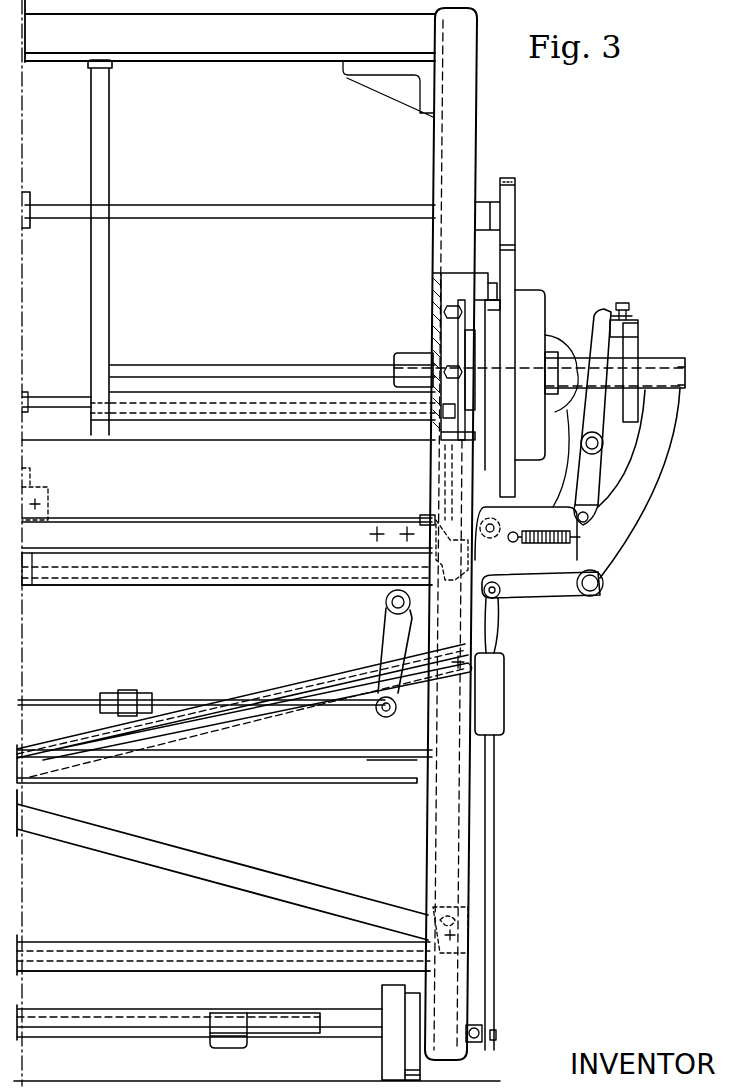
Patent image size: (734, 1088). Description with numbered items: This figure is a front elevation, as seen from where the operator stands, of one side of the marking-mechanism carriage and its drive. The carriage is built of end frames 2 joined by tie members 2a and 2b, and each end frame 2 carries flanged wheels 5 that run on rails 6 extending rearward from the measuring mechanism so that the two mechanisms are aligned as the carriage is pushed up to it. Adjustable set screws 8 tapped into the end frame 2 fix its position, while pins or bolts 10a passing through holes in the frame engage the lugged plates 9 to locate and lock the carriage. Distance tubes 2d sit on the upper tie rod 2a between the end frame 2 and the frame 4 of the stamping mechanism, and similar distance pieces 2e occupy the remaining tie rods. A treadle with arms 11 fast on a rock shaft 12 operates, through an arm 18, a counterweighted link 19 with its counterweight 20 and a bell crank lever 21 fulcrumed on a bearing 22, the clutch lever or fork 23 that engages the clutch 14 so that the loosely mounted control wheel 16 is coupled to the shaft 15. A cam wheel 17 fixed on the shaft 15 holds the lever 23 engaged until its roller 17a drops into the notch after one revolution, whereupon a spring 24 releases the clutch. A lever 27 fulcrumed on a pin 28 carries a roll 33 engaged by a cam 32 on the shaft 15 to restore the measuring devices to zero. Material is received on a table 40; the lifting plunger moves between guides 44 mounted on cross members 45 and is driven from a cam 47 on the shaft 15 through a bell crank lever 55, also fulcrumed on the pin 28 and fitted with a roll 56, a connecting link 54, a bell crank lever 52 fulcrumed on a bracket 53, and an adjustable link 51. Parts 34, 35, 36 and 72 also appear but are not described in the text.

The end frame 2 is at (460, 796).
The tie member 2a is at (244, 950).
The tie member 2b is at (195, 865).
The distance piece tube 2d is at (239, 420).
The distance piece 2e is at (152, 950).
The frame of stamping mechanism 4 is at (103, 163).
The flanged wheel 5 is at (393, 997).
The rail 6 is at (417, 1083).
The adjustable set screw 8 is at (437, 520).
The plate 9 is at (430, 518).
The pin or bolt 10a is at (500, 525).
The treadle arm 11 is at (230, 1036).
The shaft 12 is at (325, 1036).
The clutch 14 is at (525, 437).
The shaft 15 is at (556, 375).
The control wheel 16 is at (510, 265).
The cam wheel 17 is at (632, 345).
The roller 17a is at (625, 313).
The arm 18 is at (474, 1022).
The link 19 is at (495, 857).
The counterweight 20 is at (497, 697).
The bell crank lever 21 is at (566, 590).
The bearing 22 is at (628, 497).
The clutch lever 23 is at (588, 471).
The spring 24 is at (542, 540).
The lever 27 is at (480, 293).
The pin 28 is at (500, 290).
The cam 32 is at (493, 334).
The roll 33 is at (497, 303).
The vertical strip 34 is at (509, 207).
The top rail 35 is at (210, 60).
The gusset bracket 36 is at (402, 90).
The table 40 is at (308, 500).
The guide 44 is at (40, 500).
The cross member 45 is at (118, 530).
The cam 47 is at (462, 341).
The adjustable link 51 is at (57, 703).
The bell crank lever 52 is at (388, 643).
The bracket 53 is at (386, 594).
The connecting link 54 is at (438, 457).
The bell crank lever 55 is at (453, 330).
The roll 56 is at (470, 372).
The cross bar 72 is at (58, 210).